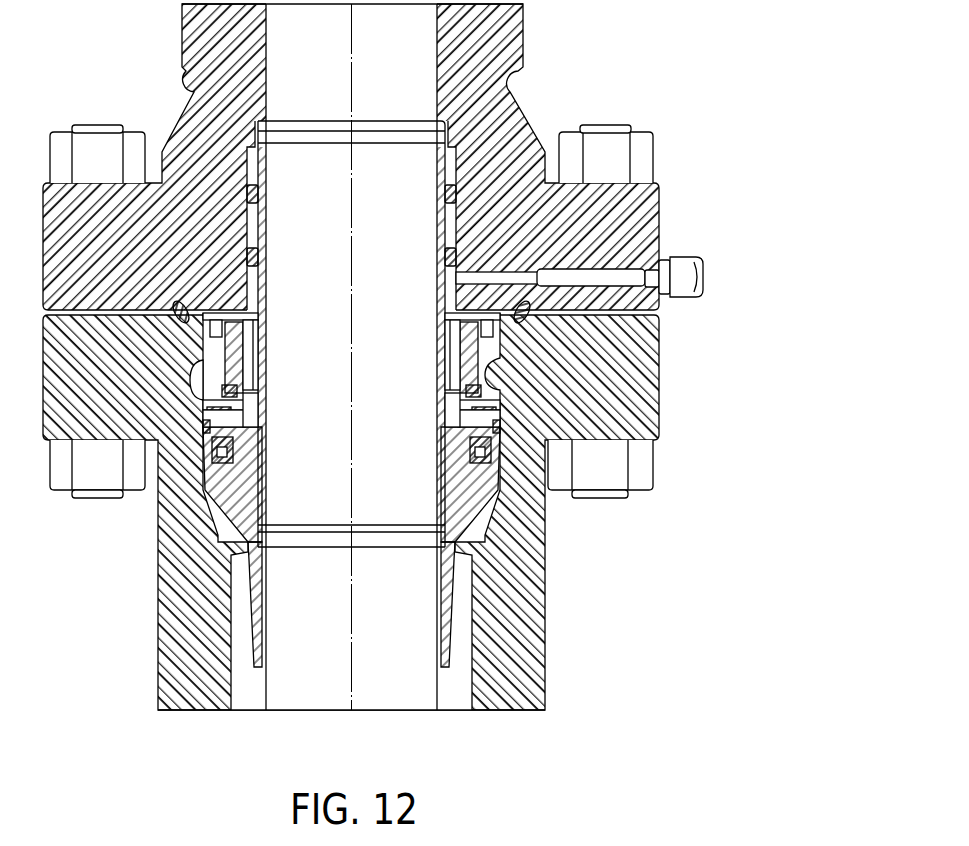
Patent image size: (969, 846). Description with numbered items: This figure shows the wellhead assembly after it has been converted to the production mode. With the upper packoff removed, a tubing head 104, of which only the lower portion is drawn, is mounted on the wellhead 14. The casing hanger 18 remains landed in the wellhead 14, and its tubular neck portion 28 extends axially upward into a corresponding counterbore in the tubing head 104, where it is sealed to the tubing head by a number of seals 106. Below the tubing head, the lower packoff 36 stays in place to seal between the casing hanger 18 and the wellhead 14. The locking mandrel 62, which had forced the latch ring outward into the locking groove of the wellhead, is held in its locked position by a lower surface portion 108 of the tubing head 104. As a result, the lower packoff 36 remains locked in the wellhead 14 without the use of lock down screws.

The tubing head 104 is at (518, 93).
The tubular neck portion 28 is at (445, 168).
The seals 106 is at (458, 262).
The lower surface portion 108 is at (457, 325).
The locking mandrel 62 is at (491, 350).
The lower packoff 36 is at (500, 453).
The casing hanger 18 is at (490, 503).
The wellhead 14 is at (546, 665).